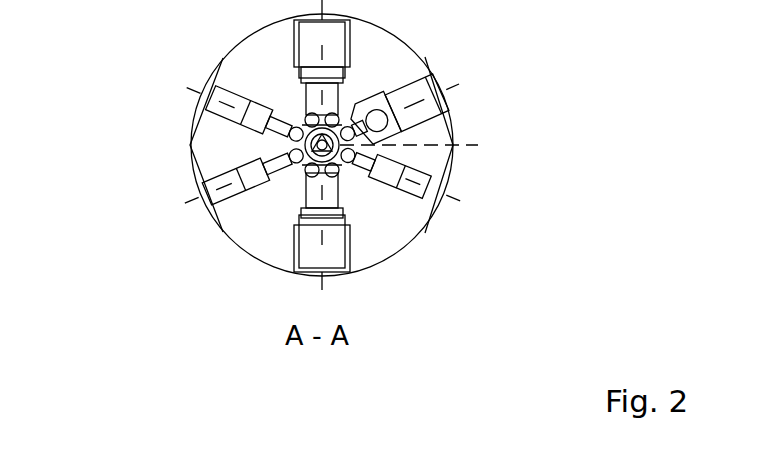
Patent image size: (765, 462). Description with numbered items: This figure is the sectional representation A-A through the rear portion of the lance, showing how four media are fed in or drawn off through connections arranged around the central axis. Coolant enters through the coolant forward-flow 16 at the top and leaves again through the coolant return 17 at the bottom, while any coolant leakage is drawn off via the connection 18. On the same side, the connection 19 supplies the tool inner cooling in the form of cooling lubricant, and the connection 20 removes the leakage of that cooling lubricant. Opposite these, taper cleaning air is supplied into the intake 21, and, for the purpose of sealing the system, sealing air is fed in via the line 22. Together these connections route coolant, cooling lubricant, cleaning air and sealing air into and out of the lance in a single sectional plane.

The coolant forward-flow 16 is at (322, 17).
The coolant return 17 is at (340, 273).
The connection 18 is at (200, 103).
The connection 19 is at (322, 146).
The connection 20 is at (200, 192).
The intake 21 is at (435, 96).
The line 22 is at (440, 185).